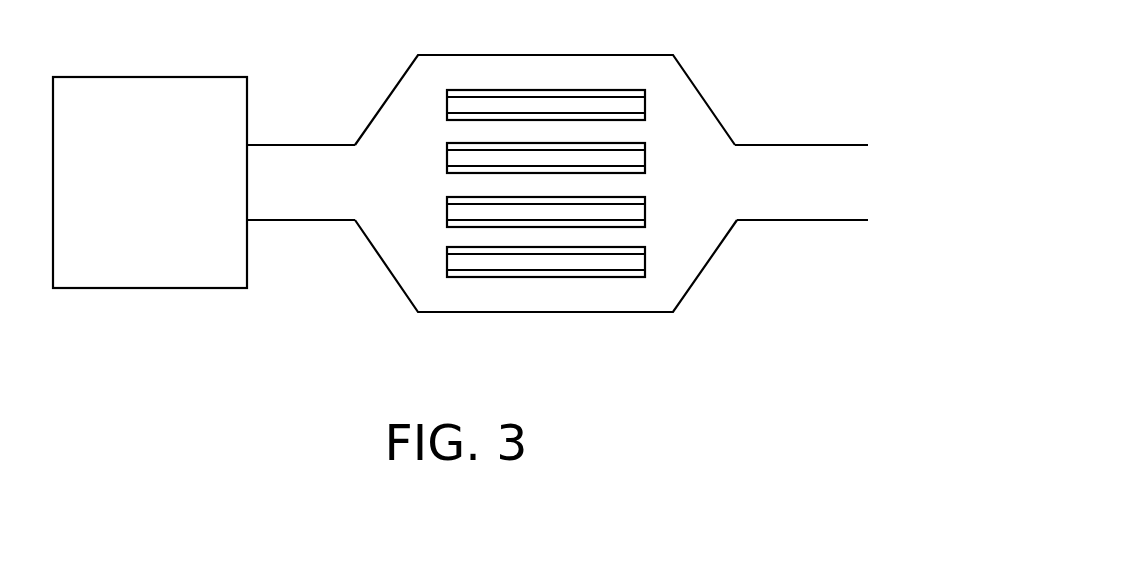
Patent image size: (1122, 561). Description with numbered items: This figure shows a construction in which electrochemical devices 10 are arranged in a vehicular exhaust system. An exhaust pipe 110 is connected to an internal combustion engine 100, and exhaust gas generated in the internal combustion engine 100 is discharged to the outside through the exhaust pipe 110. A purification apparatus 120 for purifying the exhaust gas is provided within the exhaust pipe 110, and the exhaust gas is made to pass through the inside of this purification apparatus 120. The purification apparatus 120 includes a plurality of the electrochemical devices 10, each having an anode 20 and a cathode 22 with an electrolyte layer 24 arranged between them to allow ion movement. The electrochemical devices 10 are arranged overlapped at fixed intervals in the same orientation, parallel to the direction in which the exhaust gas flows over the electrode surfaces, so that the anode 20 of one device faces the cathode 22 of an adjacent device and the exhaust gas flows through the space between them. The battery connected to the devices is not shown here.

The electrochemical device 10 is at (559, 184).
The anode 20 is at (582, 93).
The cathode 22 is at (612, 116).
The electrolyte layer 24 is at (632, 107).
The internal combustion engine 100 is at (195, 97).
The exhaust pipe 110 is at (305, 200).
The purification apparatus 120 is at (664, 249).